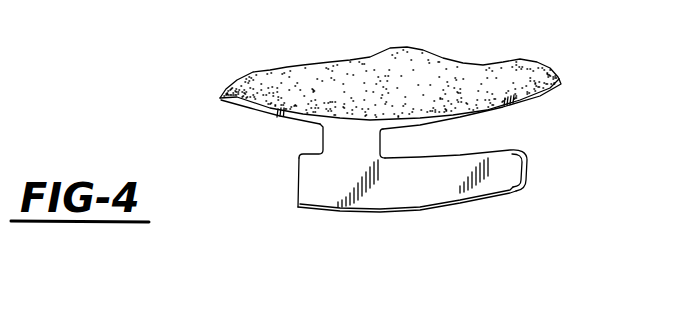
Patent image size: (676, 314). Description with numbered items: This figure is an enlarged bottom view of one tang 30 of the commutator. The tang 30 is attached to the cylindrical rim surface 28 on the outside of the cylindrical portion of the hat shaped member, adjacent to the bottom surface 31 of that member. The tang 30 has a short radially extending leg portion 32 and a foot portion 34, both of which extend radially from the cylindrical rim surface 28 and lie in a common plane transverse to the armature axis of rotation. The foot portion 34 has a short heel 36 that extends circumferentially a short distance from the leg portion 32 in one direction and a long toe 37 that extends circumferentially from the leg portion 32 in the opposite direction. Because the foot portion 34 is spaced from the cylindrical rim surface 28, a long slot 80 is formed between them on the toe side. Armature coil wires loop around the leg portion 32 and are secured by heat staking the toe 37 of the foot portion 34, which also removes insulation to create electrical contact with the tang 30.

The cylindrical rim surface 28 is at (247, 104).
The tang 30 is at (300, 214).
The bottom surface 31 is at (233, 97).
The leg portion 32 is at (333, 150).
The foot portion 34 is at (384, 210).
The heel 36 is at (297, 188).
The toe 37 is at (520, 175).
The long slot 80 is at (505, 133).